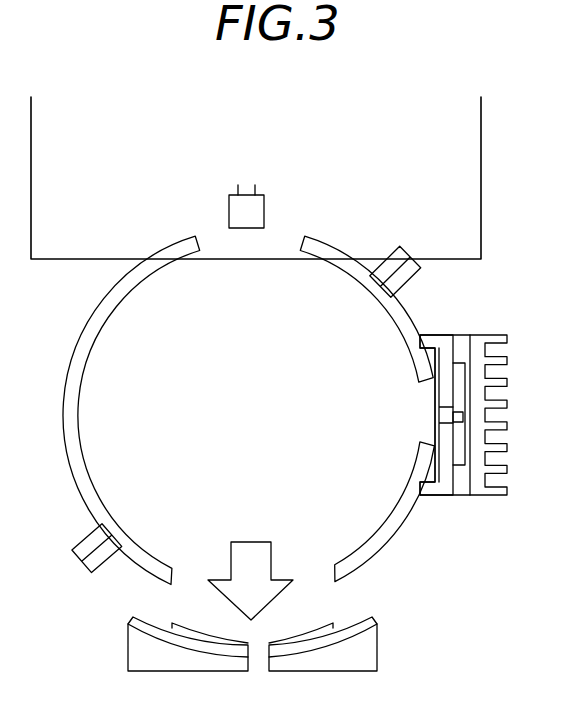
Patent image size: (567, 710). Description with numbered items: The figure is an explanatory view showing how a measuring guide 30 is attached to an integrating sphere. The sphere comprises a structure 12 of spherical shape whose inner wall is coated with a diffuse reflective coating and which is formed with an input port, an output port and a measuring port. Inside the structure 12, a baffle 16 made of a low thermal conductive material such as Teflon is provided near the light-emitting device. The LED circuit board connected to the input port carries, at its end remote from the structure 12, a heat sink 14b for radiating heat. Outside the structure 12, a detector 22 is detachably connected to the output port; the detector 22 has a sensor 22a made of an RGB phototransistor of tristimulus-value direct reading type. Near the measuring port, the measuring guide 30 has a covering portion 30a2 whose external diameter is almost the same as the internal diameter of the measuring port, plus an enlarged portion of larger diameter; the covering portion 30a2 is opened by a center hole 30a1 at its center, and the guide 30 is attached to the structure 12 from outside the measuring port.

The detector 22 is at (481, 184).
The sensor 22a is at (264, 210).
The structure 12 is at (83, 330).
The baffle 16 is at (437, 335).
The heat sink 14b is at (487, 497).
The measuring guide 30 is at (377, 650).
The center hole 30a1 is at (259, 647).
The covering portion 30a2 is at (208, 637).